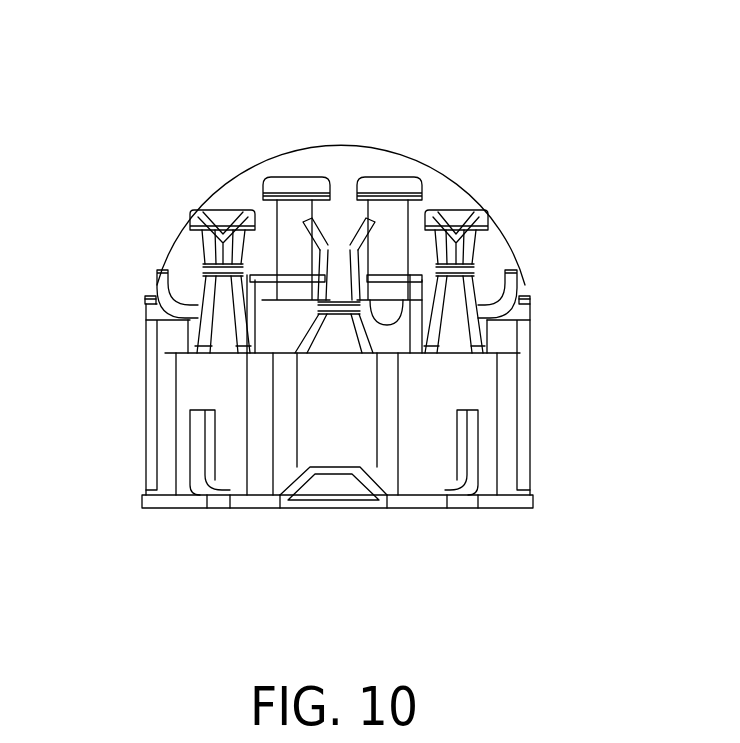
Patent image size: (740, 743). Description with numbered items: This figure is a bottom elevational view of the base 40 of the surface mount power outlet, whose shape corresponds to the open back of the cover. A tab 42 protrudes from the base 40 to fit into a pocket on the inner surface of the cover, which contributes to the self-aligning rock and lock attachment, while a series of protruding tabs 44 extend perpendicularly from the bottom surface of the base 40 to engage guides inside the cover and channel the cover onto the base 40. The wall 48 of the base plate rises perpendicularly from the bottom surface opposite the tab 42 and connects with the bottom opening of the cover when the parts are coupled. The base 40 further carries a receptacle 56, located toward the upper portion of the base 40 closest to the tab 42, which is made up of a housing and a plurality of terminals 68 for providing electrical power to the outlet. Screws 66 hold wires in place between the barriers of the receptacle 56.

The base 40 is at (140, 304).
The tab 42 is at (325, 487).
The protruding tabs 44 is at (200, 472).
The wall 48 is at (227, 186).
The receptacle 56 is at (352, 424).
The screws 66 is at (284, 180).
The terminals 68 is at (232, 203).